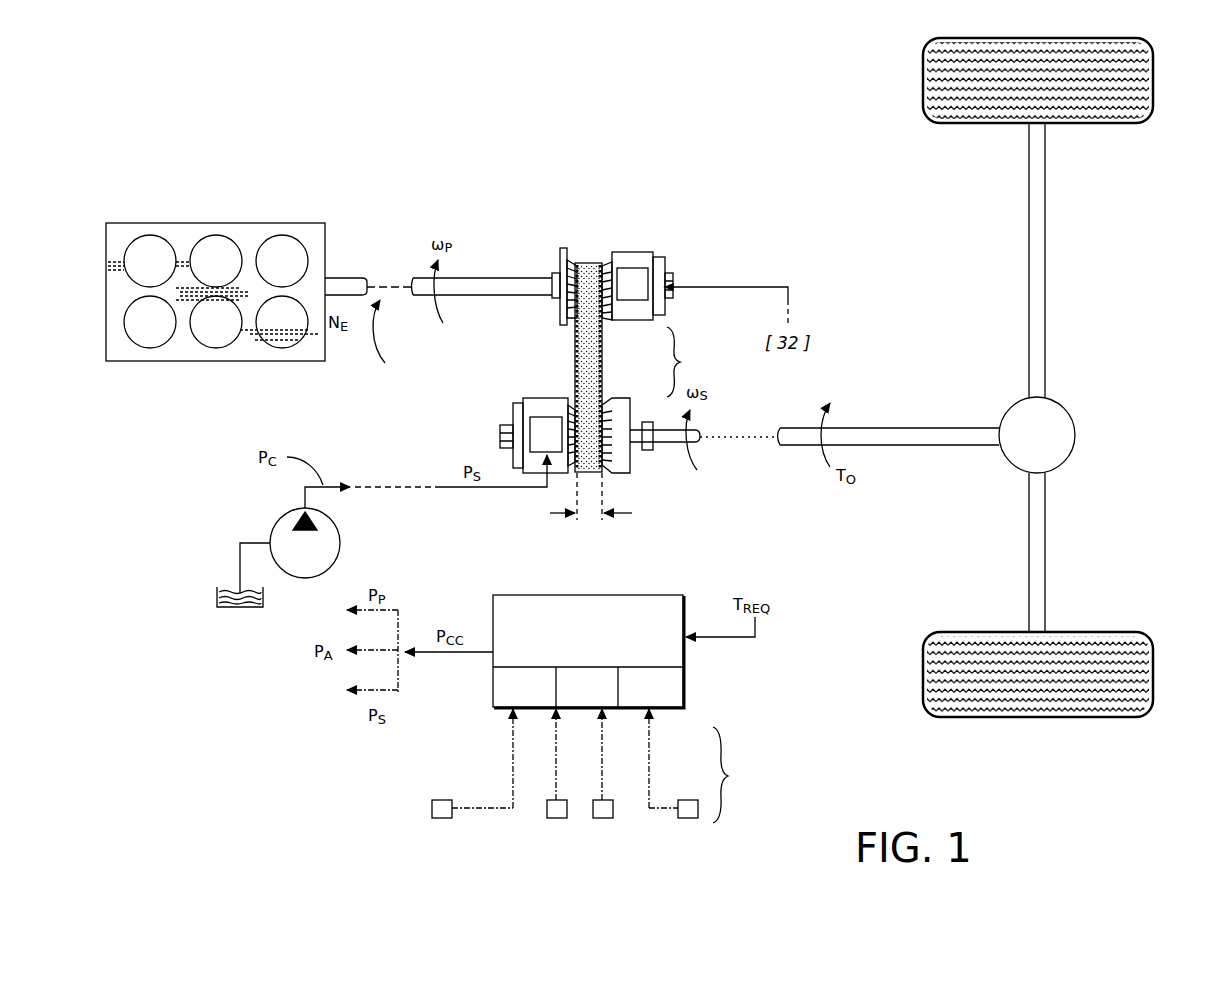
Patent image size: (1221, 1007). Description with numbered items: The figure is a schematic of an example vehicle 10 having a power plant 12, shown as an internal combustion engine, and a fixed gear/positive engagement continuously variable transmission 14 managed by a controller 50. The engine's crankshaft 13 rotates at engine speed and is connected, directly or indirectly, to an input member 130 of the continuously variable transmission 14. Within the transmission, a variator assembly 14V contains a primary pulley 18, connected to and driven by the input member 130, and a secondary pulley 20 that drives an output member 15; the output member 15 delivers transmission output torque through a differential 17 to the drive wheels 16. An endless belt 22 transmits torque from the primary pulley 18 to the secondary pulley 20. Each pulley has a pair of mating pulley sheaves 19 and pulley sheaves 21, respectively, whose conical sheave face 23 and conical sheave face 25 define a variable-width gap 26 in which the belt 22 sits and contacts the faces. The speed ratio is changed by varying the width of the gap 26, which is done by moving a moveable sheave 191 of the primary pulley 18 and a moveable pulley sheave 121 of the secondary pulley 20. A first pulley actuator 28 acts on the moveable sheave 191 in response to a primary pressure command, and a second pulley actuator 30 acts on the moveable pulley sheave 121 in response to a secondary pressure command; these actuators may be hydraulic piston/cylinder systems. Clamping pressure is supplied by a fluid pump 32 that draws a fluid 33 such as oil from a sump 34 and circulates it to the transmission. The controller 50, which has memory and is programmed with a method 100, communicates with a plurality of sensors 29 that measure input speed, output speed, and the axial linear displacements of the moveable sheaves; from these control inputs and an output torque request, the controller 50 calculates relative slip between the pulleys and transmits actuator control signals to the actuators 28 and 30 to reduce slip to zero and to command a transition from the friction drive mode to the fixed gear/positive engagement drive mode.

The vehicle 10 is at (413, 113).
The power plant 12 is at (216, 223).
The crankshaft 13 is at (343, 278).
The continuously variable transmission 14 is at (783, 270).
The variator assembly 14V is at (692, 362).
The output member 15 is at (663, 445).
The drive wheels 16 is at (1157, 82).
The differential 17 is at (1037, 435).
The primary pulley 18 is at (575, 351).
The pulley sheaves 19 is at (647, 259).
The moveable sheave 191 is at (560, 312).
The secondary pulley 20 is at (528, 503).
The pulley sheaves 21 is at (529, 418).
The moveable pulley sheave 121 is at (510, 413).
The belt 22 is at (593, 377).
The conical sheave face 23 is at (608, 262).
The conical sheave face 25 is at (568, 388).
The variable-width gap 26 is at (618, 517).
The first pulley actuator 28 is at (633, 252).
The second pulley actuator 30 is at (535, 398).
The sensors 29 is at (588, 782).
The fluid pump 32 is at (393, 524).
The fluid 33 is at (230, 587).
The sump 34 is at (217, 597).
The controller 50 is at (588, 651).
The method 100 is at (524, 687).
The input member 130 is at (485, 278).